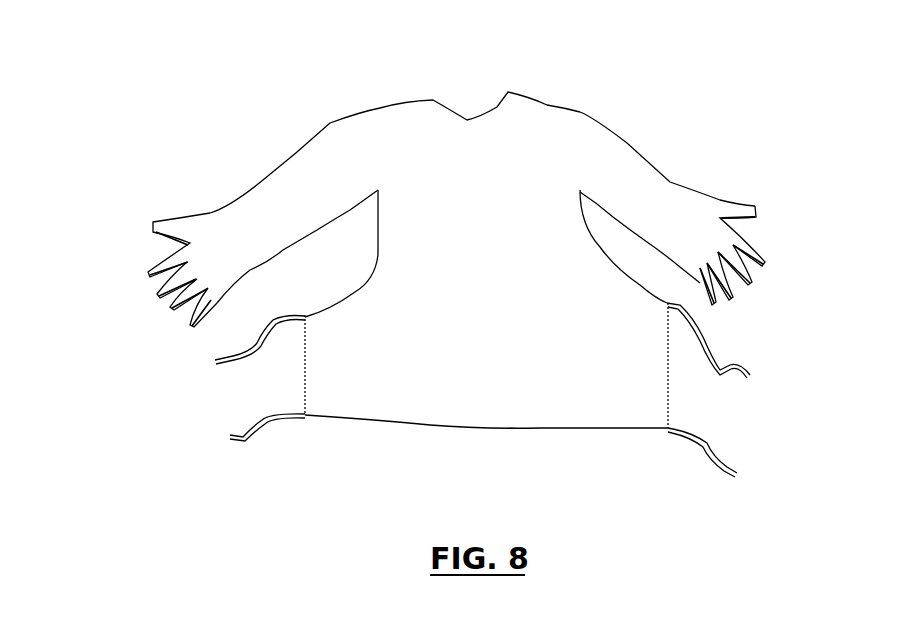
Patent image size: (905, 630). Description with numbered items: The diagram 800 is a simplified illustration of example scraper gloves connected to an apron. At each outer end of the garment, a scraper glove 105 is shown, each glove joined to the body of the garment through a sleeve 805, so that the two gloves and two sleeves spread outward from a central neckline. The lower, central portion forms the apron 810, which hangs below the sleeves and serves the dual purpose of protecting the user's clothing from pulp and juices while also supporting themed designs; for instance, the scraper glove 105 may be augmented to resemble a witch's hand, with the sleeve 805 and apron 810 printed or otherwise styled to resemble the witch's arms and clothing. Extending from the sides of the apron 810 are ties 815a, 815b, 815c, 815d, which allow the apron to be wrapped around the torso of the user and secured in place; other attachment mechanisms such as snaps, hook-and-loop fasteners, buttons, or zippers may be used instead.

The diagram 800 is at (116, 72).
The sleeve 805 is at (289, 130).
The scraper glove 105 is at (197, 198).
The apron 810 is at (533, 450).
The tie 815a is at (191, 365).
The tie 815b is at (211, 434).
The tie 815c is at (774, 381).
The tie 815d is at (765, 478).